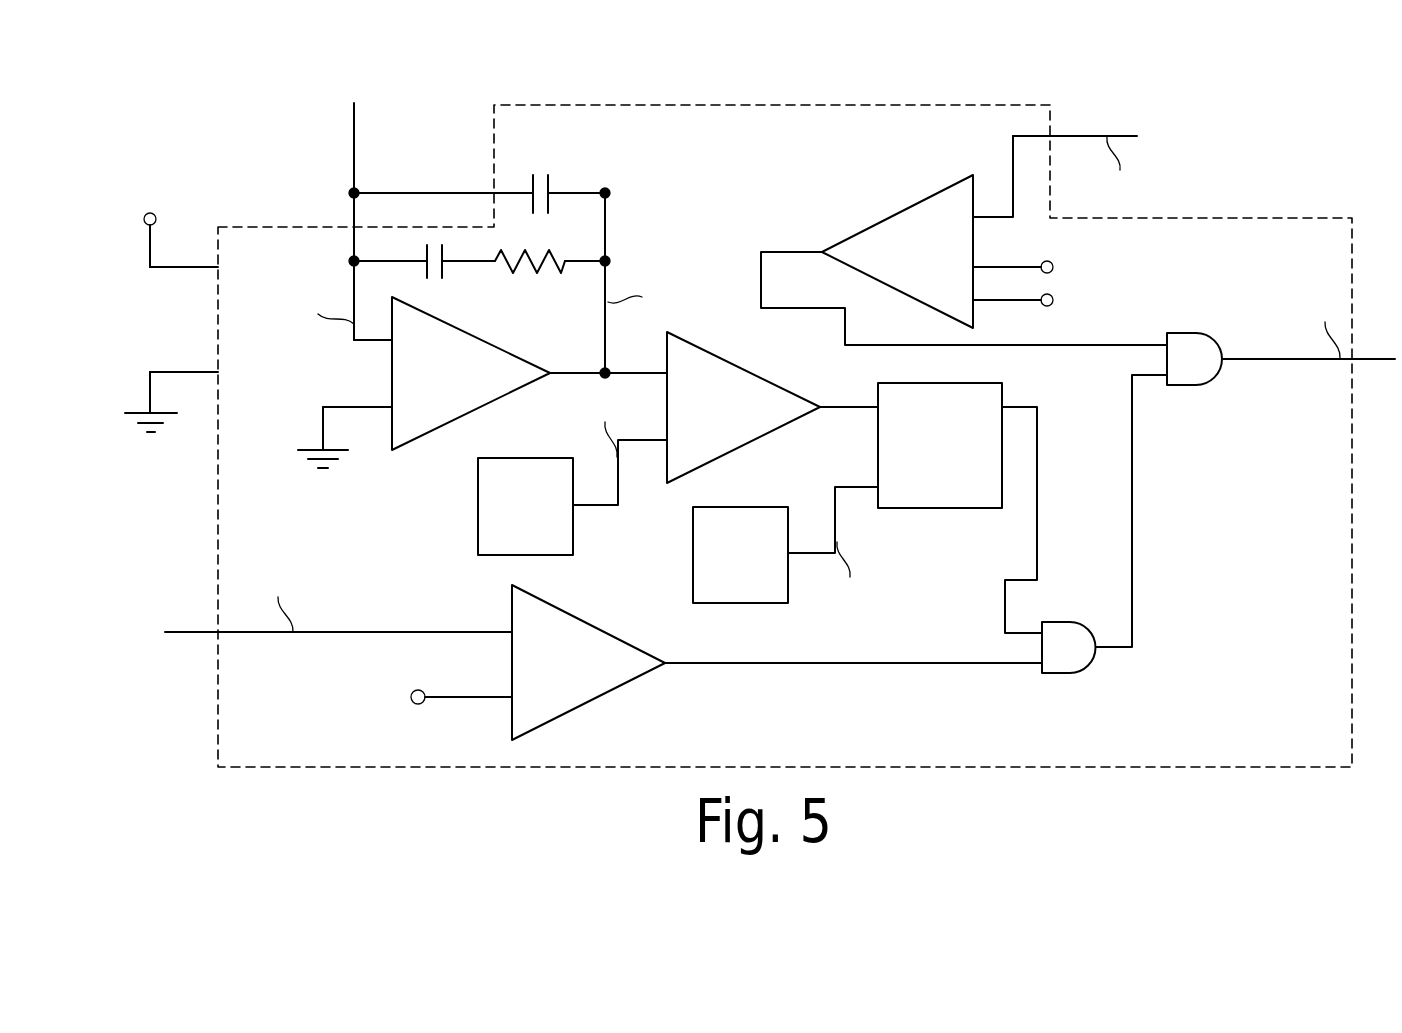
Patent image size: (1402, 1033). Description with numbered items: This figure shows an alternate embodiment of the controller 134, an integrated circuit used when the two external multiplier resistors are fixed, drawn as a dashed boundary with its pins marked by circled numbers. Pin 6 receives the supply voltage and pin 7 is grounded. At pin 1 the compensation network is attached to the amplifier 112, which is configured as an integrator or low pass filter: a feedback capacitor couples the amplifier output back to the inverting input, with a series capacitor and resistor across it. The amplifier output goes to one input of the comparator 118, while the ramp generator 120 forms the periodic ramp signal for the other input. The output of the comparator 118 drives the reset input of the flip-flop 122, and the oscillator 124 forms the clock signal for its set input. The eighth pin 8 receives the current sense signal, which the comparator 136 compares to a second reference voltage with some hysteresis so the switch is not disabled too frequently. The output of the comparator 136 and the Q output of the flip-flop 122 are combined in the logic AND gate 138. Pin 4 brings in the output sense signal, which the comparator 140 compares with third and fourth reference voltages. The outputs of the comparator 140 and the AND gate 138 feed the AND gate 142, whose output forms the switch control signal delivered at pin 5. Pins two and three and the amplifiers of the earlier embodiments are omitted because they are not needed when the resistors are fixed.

The pin 1 is at (354, 190).
The pin 4 is at (1080, 135).
The pin 5 is at (1257, 360).
The pin 6 is at (150, 267).
The pin 7 is at (150, 372).
The eighth pin 8 is at (190, 632).
The amplifier 112 is at (396, 451).
The comparator 118 is at (668, 332).
The ramp generator 120 is at (478, 523).
The flip-flop 122 is at (917, 508).
The oscillator 124 is at (748, 505).
The controller 134 is at (1315, 730).
The comparator 136 is at (597, 625).
The logic AND gate 138 is at (1057, 622).
The comparator 140 is at (880, 217).
The logic AND gate 142 is at (1180, 333).